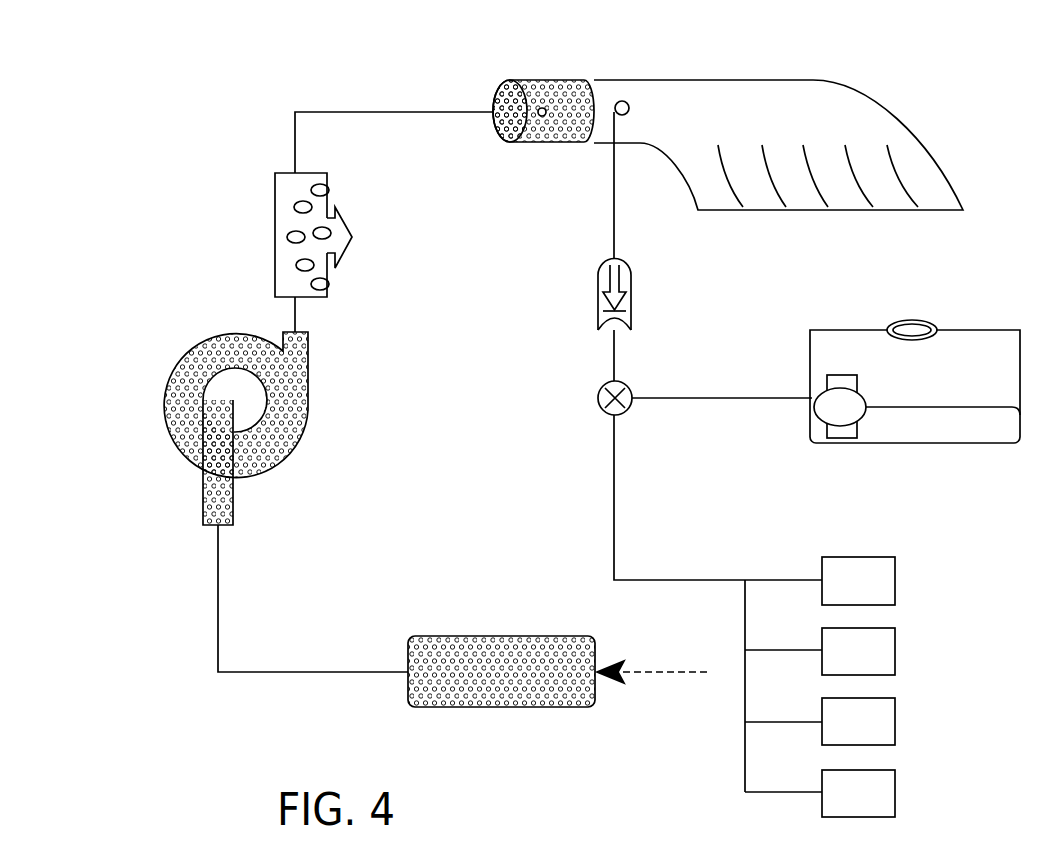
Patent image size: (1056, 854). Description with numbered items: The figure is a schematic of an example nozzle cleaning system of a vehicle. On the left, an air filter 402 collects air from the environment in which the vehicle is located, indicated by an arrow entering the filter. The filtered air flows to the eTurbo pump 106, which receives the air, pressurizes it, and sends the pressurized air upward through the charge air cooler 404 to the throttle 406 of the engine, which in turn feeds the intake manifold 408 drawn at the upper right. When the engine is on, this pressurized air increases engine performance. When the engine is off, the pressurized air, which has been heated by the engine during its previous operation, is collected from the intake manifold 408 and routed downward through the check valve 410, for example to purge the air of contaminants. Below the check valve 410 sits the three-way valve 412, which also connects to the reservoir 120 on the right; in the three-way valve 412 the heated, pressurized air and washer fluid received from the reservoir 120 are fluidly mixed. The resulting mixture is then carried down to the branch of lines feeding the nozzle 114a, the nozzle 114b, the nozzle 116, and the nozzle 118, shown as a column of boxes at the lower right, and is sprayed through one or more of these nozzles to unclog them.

The eTurbo pump 106 is at (163, 404).
The air filter 402 is at (502, 636).
The charge air cooler 404 is at (275, 218).
The throttle 406 is at (541, 80).
The intake manifold 408 is at (719, 80).
The check valve 410 is at (598, 295).
The three-way valve 412 is at (598, 400).
The reservoir 120 is at (940, 381).
The nozzle 114a is at (883, 593).
The nozzle 114b is at (883, 663).
The nozzle 116 is at (877, 733).
The nozzle 118 is at (877, 804).